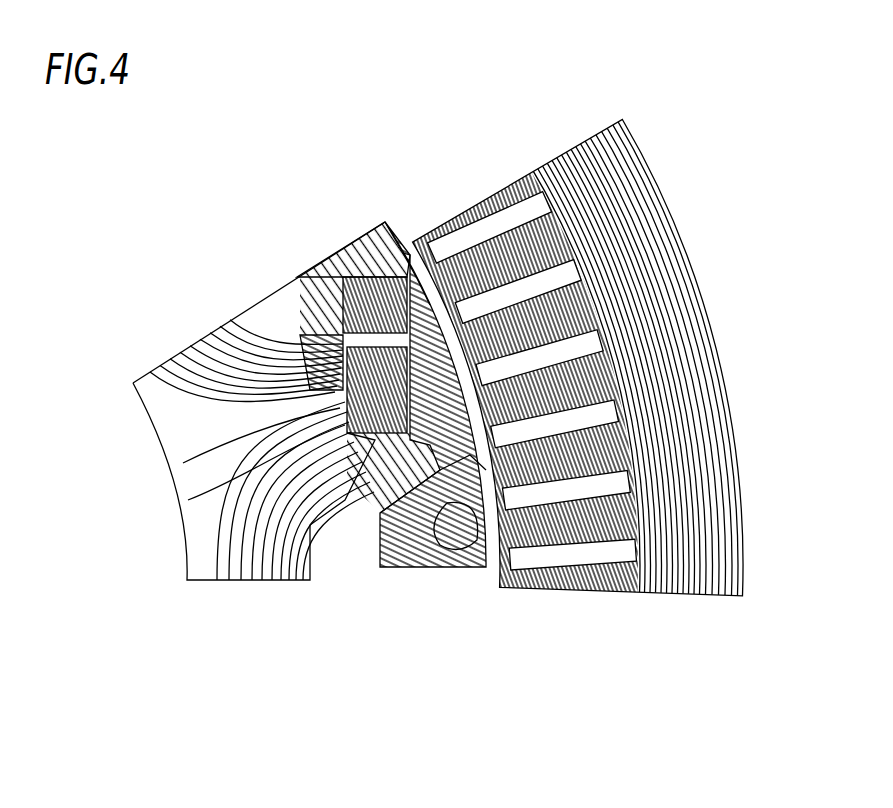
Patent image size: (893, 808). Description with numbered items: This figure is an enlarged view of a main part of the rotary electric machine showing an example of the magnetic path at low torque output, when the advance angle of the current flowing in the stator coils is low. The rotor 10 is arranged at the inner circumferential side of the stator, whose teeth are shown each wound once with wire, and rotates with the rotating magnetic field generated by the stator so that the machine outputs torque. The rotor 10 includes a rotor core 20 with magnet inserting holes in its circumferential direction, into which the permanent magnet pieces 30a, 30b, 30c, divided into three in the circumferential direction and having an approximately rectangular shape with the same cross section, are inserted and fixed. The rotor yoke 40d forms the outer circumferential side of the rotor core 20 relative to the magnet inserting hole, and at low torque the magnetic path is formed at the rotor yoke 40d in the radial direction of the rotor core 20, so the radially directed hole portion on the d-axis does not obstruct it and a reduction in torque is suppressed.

The rotor 10 is at (336, 626).
The rotor core 20 is at (258, 580).
The permanent magnet piece 30a is at (375, 267).
The permanent magnet piece 30b is at (300, 335).
The permanent magnet piece 30c is at (460, 565).
The rotor yoke 40d is at (447, 232).